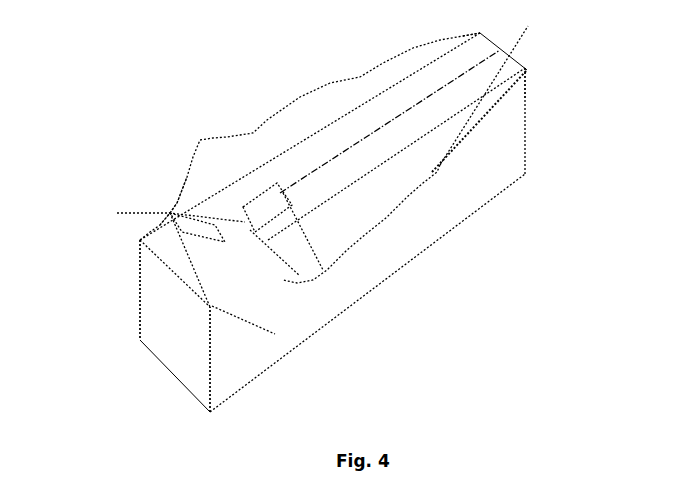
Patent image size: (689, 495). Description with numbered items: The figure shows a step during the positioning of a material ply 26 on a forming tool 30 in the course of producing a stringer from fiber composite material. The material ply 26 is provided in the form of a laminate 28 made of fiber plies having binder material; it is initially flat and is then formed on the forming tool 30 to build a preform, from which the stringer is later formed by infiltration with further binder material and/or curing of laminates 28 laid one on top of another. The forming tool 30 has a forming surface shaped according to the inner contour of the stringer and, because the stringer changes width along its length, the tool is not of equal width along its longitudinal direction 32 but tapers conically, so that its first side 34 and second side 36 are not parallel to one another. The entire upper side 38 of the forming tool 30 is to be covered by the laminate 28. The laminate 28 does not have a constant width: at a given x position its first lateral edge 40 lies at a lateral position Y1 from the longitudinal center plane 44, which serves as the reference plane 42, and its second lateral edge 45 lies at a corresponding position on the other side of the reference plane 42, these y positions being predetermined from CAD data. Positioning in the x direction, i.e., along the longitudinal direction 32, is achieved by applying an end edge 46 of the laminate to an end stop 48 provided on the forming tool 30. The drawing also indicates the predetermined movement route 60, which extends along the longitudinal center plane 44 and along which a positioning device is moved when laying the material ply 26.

The material ply 26 is at (290, 120).
The laminate 28 is at (322, 100).
The forming tool 30 is at (515, 150).
The longitudinal direction 32 is at (217, 235).
The first side 34 is at (469, 213).
The second side 36 is at (157, 198).
The upper side 38 is at (523, 68).
The first lateral edge 40 is at (517, 66).
The reference plane 42 is at (283, 193).
The longitudinal center plane 44 is at (420, 260).
The second lateral edge 45 is at (480, 33).
The end edge 46 is at (200, 295).
The end stop 48 is at (197, 297).
The movement route 60 is at (398, 130).